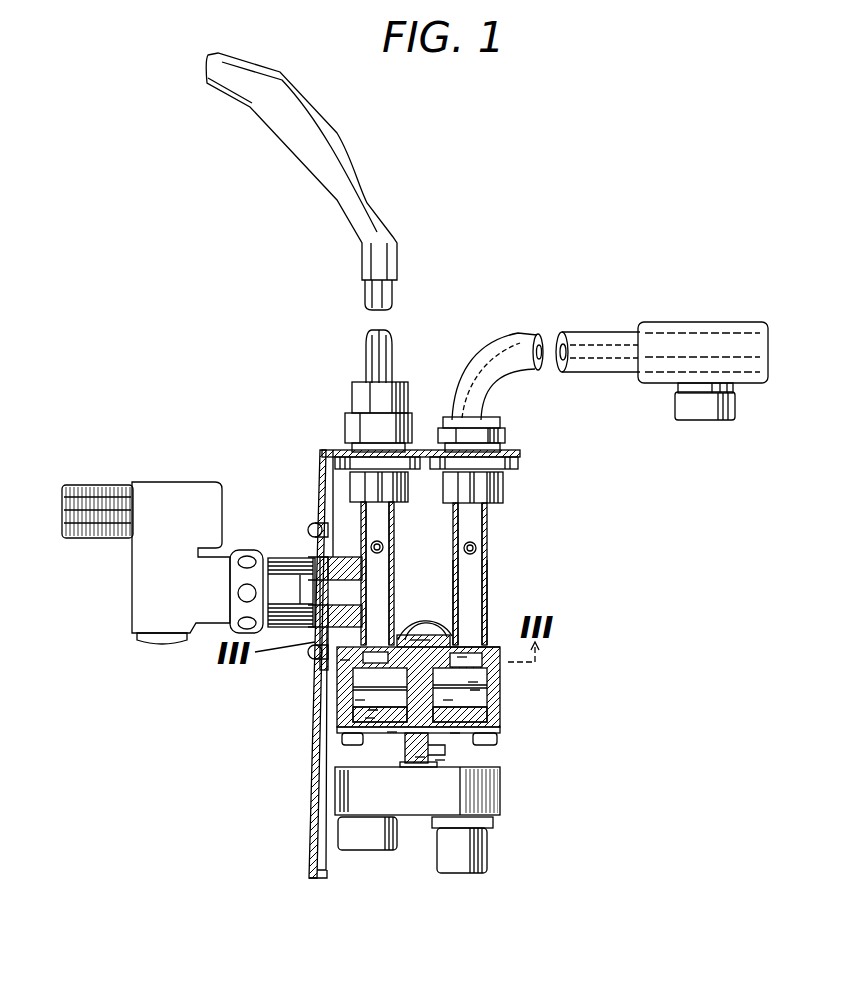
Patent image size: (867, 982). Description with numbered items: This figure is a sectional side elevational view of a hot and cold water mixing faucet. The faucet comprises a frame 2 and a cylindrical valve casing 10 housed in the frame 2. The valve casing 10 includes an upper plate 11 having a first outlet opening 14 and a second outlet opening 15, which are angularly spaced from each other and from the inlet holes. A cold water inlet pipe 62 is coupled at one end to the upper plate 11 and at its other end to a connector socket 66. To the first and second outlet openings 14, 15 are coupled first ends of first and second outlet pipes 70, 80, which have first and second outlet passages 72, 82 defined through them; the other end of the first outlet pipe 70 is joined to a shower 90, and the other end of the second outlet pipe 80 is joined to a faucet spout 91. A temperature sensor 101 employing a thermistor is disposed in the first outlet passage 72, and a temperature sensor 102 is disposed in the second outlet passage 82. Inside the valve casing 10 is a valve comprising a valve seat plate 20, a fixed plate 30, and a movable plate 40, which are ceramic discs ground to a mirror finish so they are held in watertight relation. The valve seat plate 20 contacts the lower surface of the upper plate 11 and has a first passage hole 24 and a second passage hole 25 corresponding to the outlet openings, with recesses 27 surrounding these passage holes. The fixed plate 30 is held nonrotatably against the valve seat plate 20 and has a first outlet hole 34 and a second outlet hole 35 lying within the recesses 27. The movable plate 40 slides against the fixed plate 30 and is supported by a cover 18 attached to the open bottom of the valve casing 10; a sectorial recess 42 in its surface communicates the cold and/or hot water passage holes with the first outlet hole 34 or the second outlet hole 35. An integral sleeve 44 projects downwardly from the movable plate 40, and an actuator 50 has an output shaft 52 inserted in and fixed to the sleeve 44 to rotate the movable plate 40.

The frame 2 is at (310, 857).
The valve casing 10 is at (353, 682).
The upper plate 11 is at (413, 640).
The first outlet opening 14 is at (345, 662).
The second outlet opening 15 is at (467, 635).
The cover 18 is at (420, 757).
The valve seat plate 20 is at (473, 682).
The first passage hole 24 is at (360, 700).
The second passage hole 25 is at (462, 660).
The recesses 27 is at (372, 710).
The fixed plate 30 is at (455, 733).
The first outlet hole 34 is at (370, 718).
The second outlet hole 35 is at (448, 700).
The movable plate 40 is at (440, 745).
The recess 42 is at (392, 732).
The sleeve 44 is at (400, 748).
The actuator 50 is at (418, 817).
The output shaft 52 is at (440, 760).
The cold water inlet pipe 62 is at (410, 593).
The connector socket 66 is at (133, 597).
The first outlet pipe 70 is at (365, 537).
The first outlet passage 72 is at (372, 516).
The second outlet pipe 80 is at (487, 573).
The second outlet passage 82 is at (485, 518).
The shower 90 is at (337, 137).
The faucet spout 91 is at (618, 332).
The temperature sensor 101 is at (387, 538).
The temperature sensor 102 is at (485, 547).